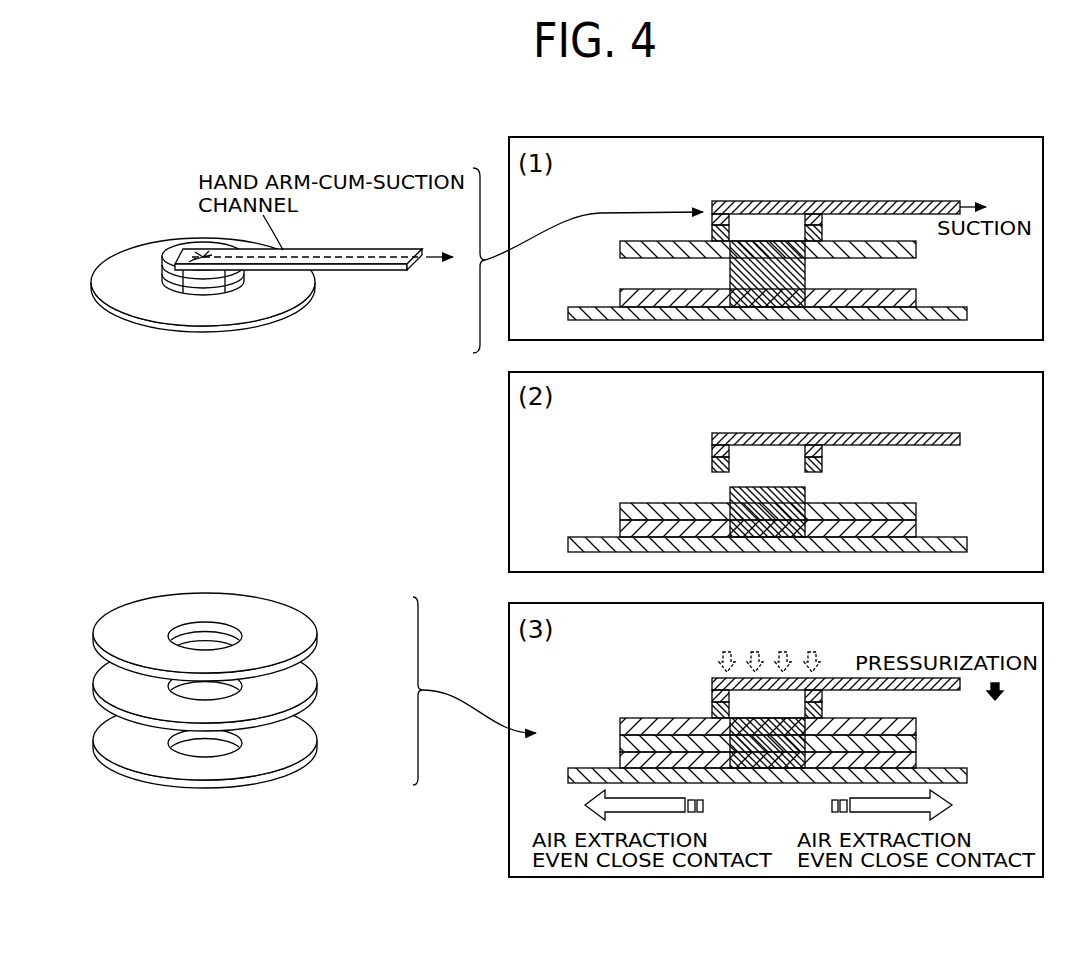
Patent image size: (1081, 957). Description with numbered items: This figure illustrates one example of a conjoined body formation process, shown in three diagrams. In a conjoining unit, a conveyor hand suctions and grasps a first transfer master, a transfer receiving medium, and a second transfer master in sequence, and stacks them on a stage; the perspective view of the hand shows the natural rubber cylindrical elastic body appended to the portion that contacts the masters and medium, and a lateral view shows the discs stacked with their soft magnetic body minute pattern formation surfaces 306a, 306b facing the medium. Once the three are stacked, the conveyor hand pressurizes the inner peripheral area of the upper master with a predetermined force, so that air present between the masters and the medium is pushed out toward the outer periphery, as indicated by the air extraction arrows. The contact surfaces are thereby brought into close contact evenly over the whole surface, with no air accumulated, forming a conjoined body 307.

The soft magnetic body minute pattern formation surface 306a is at (287, 738).
The soft magnetic body minute pattern formation surface 306b is at (283, 685).
The conjoined body 307 is at (759, 730).